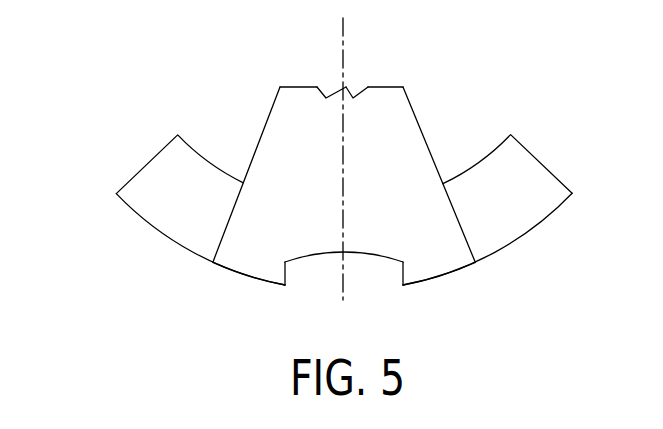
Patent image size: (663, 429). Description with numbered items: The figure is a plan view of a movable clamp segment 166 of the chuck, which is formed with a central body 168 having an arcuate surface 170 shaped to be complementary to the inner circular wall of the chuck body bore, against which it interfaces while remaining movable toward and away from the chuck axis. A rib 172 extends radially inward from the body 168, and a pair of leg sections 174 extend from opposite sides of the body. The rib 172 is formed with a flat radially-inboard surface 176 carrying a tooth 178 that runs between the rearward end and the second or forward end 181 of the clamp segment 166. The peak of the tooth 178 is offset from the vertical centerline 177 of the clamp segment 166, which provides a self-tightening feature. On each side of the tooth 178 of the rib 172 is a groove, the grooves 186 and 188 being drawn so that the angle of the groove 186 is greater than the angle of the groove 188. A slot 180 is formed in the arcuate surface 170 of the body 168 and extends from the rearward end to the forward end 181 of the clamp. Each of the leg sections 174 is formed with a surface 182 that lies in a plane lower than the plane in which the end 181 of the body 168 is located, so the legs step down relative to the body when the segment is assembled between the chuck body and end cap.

The movable clamp segment 166 is at (196, 74).
The central body 168 is at (448, 255).
The arcuate surface 170 is at (420, 282).
The rib 172 is at (400, 137).
The leg sections 174 is at (122, 191).
The flat radially-inboard surface 176 is at (290, 85).
The vertical centerline 177 is at (343, 32).
The tooth 178 is at (353, 97).
The slot 180 is at (318, 262).
The second or forward end 181 is at (277, 165).
The surface 182 is at (152, 178).
The groove 186 is at (326, 97).
The groove 188 is at (370, 87).